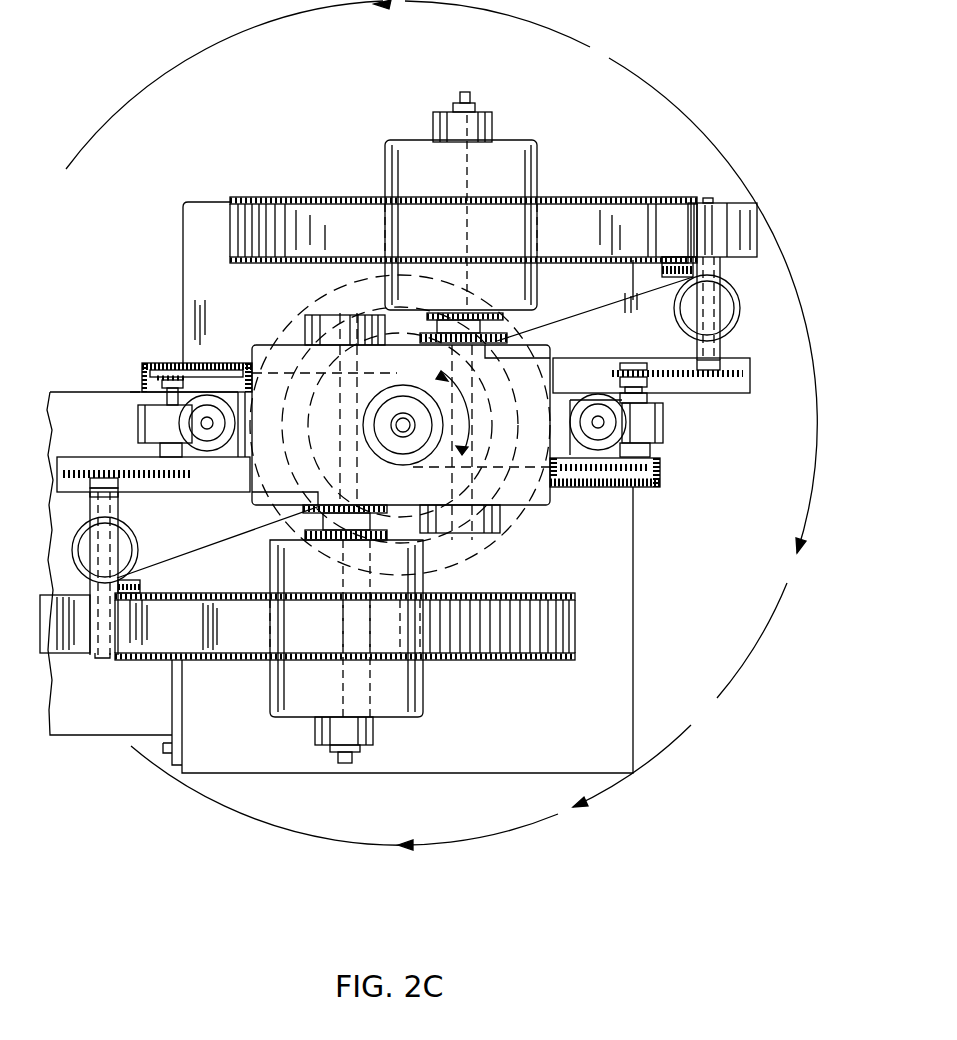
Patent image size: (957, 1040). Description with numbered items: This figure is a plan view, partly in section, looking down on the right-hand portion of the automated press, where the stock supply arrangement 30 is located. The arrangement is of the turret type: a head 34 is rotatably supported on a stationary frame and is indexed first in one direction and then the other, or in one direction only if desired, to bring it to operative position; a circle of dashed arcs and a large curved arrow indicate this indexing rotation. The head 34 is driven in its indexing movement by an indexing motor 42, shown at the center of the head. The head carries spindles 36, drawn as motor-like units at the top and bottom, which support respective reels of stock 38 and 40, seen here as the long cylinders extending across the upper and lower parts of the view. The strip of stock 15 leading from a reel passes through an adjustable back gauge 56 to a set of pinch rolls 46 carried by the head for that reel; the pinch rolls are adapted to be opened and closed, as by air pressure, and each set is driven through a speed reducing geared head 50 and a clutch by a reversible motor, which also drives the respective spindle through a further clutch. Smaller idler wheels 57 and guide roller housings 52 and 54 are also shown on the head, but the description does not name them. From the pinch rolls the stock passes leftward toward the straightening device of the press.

The strip of stock 15 is at (215, 637).
The stock supply arrangement 30 is at (643, 667).
The head 34 is at (540, 523).
The spindles 36 is at (490, 132).
The reel of stock 38 is at (503, 660).
The reel of stock 40 is at (297, 200).
The indexing motor 42 is at (406, 459).
The set of pinch rolls 46 is at (713, 217).
The speed reducing geared head 50 is at (653, 430).
The left guide roller assembly 52 is at (203, 363).
The top roller 54 is at (323, 327).
The adjustable back gauge 56 is at (672, 258).
The idler wheel 57 is at (740, 314).